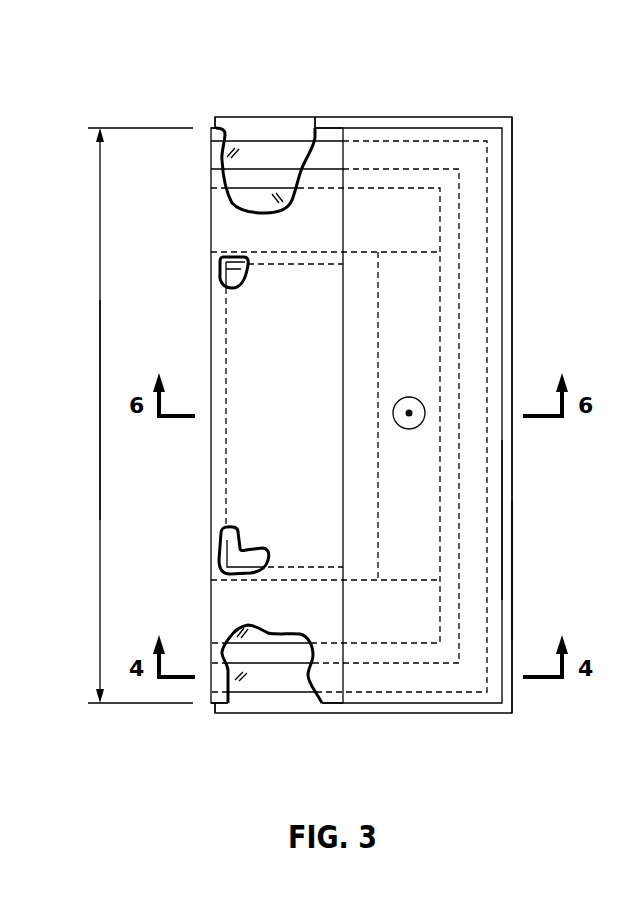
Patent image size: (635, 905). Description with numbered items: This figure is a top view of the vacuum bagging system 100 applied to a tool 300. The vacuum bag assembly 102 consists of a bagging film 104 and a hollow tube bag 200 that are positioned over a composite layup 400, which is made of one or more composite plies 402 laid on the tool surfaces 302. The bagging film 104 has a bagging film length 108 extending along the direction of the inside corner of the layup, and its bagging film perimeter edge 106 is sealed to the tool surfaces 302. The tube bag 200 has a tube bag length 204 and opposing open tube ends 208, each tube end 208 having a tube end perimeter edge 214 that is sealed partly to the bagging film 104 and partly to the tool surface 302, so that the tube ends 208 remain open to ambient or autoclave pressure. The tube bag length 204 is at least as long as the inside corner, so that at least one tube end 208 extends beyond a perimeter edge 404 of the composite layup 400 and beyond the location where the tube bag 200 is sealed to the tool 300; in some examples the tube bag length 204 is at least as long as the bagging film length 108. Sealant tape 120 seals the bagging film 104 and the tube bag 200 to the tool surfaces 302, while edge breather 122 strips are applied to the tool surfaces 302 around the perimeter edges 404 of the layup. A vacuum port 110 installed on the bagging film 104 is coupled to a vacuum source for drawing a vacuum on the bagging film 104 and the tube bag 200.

The vacuum bagging system 100 is at (490, 90).
The vacuum bag assembly 102 is at (372, 130).
The bagging film 104 is at (492, 183).
The bagging film perimeter edge 106 is at (503, 253).
The bagging film length 108 is at (100, 393).
The vacuum port 110 is at (409, 413).
The sealant tape 120 is at (230, 155).
The edge breather 122 is at (277, 192).
The tube bag 200 is at (242, 474).
The tube bag length 204 is at (100, 442).
The tube ends 208 is at (330, 128).
The tube end perimeter edge 214 is at (213, 130).
The tool 300 is at (514, 565).
The tool surfaces 302 is at (506, 503).
The composite layup 400 is at (220, 273).
The composite plies 402 is at (222, 275).
The perimeter edge 404 is at (218, 553).